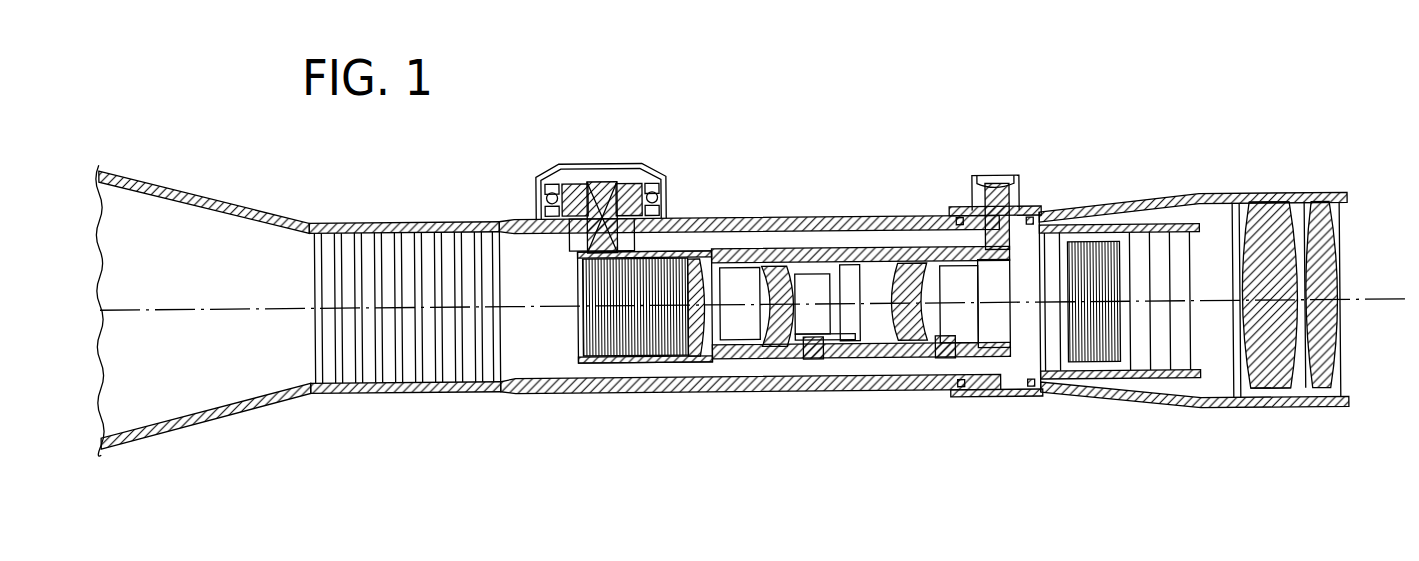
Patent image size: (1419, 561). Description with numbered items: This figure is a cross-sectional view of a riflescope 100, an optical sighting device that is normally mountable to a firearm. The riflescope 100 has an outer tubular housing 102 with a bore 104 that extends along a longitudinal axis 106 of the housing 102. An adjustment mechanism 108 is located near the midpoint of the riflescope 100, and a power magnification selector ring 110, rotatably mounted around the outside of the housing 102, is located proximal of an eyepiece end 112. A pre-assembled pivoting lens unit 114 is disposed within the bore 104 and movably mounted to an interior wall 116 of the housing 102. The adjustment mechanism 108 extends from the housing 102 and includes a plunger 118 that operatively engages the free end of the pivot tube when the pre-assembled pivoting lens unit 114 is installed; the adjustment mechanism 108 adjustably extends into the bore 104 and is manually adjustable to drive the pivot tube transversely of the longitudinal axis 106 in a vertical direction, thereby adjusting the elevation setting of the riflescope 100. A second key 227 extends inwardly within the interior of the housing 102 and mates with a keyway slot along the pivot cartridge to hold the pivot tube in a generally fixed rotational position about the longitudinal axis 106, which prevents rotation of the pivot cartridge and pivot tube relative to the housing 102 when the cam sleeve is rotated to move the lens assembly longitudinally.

The riflescope 100 is at (787, 206).
The outer tubular housing 102 is at (660, 392).
The bore 104 is at (537, 352).
The longitudinal axis 106 is at (1367, 300).
The adjustment mechanism 108 is at (576, 170).
The power magnification selector ring 110 is at (998, 178).
The eyepiece end 112 is at (1218, 430).
The pre-assembled pivoting lens unit 114 is at (880, 364).
The interior wall 116 is at (795, 366).
The plunger 118 is at (621, 205).
The second key 227 is at (1094, 216).